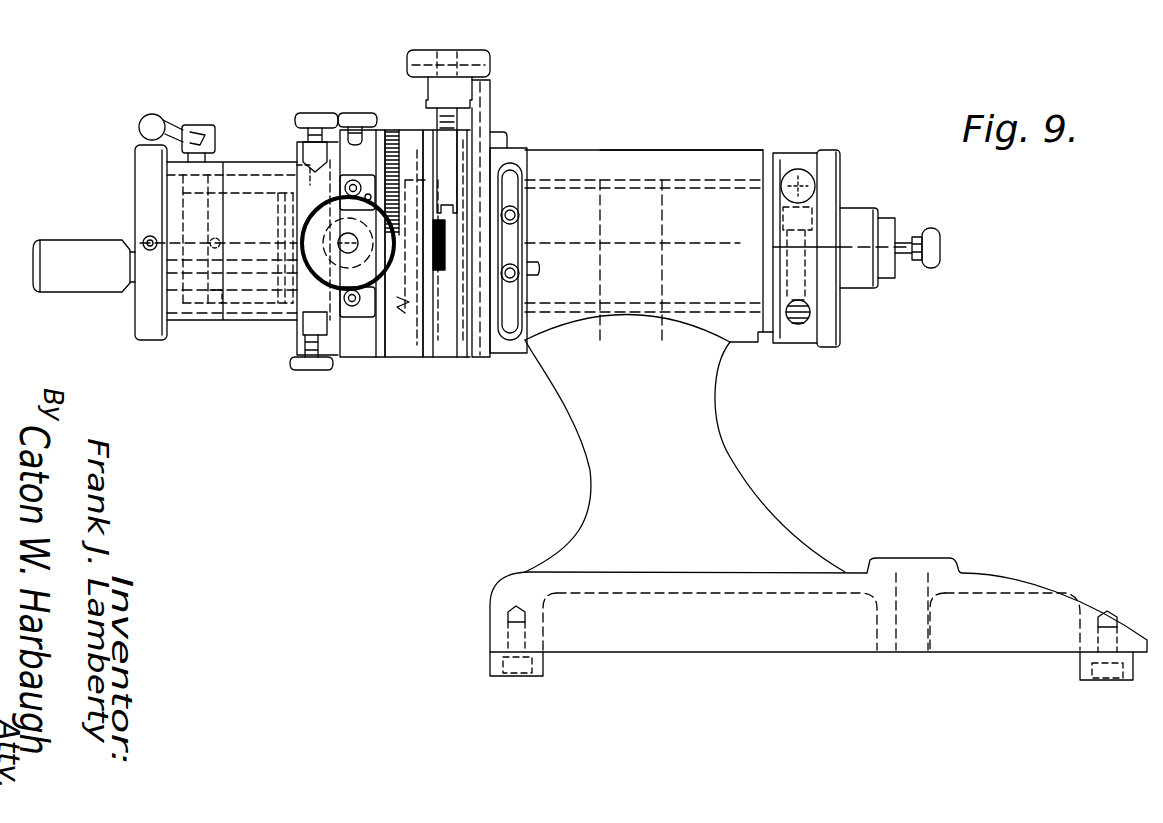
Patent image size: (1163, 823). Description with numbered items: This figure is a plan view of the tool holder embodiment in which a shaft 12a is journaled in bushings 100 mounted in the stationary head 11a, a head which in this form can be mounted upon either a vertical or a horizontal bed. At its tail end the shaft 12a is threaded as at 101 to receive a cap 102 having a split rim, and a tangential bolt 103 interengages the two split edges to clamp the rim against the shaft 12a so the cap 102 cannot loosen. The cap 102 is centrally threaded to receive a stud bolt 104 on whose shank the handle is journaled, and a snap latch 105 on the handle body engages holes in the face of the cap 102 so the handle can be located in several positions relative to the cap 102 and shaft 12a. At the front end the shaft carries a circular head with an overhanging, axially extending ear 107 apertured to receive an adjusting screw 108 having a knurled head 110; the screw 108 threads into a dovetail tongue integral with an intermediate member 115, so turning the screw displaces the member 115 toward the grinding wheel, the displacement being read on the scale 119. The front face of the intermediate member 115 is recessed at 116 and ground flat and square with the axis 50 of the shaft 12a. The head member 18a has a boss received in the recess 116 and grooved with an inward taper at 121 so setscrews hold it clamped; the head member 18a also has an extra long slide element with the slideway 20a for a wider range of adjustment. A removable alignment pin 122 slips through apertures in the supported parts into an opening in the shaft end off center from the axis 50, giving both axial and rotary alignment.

The knurled head 110 is at (480, 62).
The ear 107 is at (462, 90).
The adjusting screw 108 is at (455, 117).
The scale 119 is at (437, 240).
The inwardly tapered groove 121 is at (346, 192).
The bushings 100 is at (573, 180).
The shaft 12a is at (624, 208).
The head 11a is at (684, 163).
The threaded tail end 101 is at (800, 195).
The tangential bolt 103 is at (818, 217).
The axis 50 is at (936, 248).
The snap latch 105 is at (904, 262).
The stud bolt 104 is at (885, 282).
The cap 102 is at (793, 343).
The alignment pin 122 is at (96, 222).
The slideway 20a is at (333, 293).
The head member 18a is at (360, 347).
The recess 116 is at (405, 305).
The intermediate member 115 is at (402, 357).